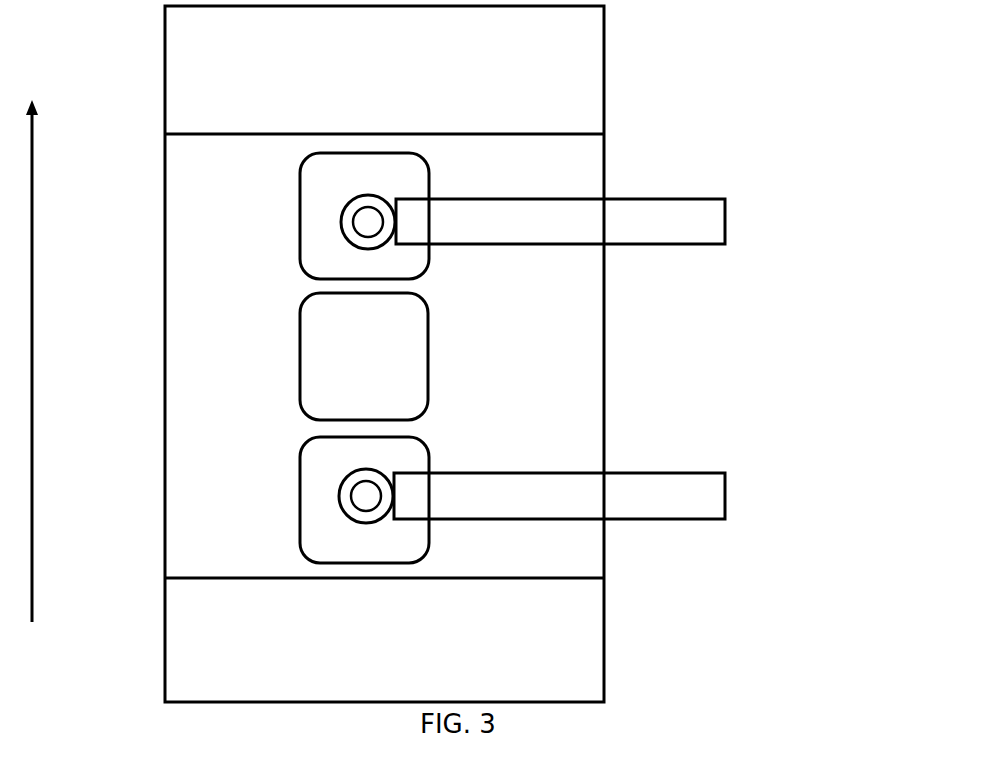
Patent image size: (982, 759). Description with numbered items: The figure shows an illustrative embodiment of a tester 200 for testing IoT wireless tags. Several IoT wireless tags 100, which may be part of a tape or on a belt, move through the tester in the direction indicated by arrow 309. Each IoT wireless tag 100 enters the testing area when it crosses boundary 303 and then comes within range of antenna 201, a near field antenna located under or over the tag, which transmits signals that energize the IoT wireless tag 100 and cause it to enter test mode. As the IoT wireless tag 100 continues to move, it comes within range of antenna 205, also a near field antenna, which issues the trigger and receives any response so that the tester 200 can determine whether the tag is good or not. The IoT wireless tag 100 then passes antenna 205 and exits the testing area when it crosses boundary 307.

The tester 200 is at (899, 136).
The boundary 307 is at (578, 133).
The boundary 303 is at (570, 582).
The arrow 309 is at (25, 197).
The IoT wireless tag 100 is at (337, 187).
The antenna 205 is at (337, 222).
The antenna 201 is at (338, 496).